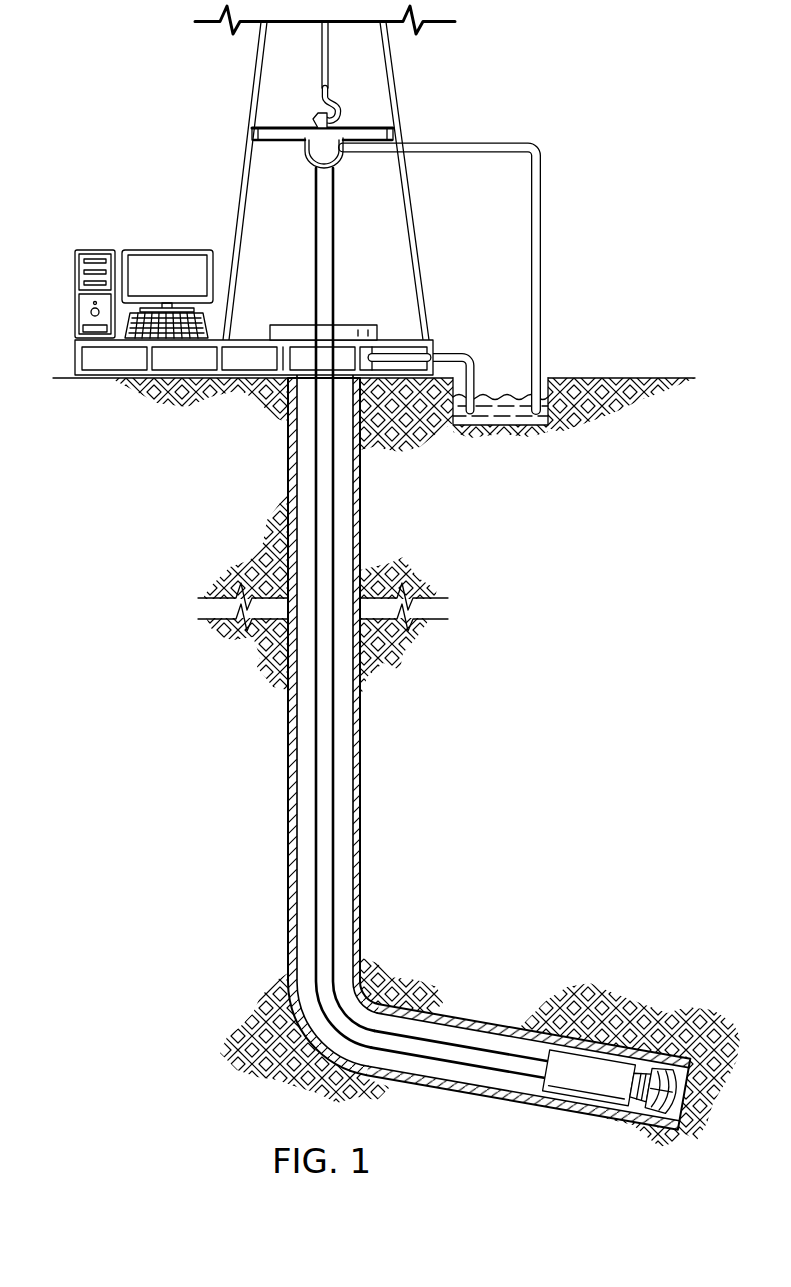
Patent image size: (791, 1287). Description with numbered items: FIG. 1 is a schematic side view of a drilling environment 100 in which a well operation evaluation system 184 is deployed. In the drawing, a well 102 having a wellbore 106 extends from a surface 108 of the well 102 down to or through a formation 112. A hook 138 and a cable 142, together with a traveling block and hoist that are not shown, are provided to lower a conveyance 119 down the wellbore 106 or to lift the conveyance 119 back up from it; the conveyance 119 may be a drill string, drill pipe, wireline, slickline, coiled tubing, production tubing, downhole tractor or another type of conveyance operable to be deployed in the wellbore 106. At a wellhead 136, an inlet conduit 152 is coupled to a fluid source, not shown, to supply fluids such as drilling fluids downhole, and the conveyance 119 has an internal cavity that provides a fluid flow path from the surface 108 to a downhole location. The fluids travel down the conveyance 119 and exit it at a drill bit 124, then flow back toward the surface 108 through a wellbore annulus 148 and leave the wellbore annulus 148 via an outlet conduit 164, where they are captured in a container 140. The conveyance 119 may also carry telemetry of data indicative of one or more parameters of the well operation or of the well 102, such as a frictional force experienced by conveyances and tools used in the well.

The drilling environment 100 is at (178, 156).
The well 102 is at (352, 316).
The wellbore 106 is at (357, 513).
The surface 108 is at (672, 377).
The formation 112 is at (510, 982).
The conveyance 119 is at (320, 851).
The drill bit 124 is at (666, 1112).
The wellhead 136 is at (292, 325).
The hook 138 is at (338, 112).
The container 140 is at (505, 423).
The cable 142 is at (322, 77).
The wellbore annulus 148 is at (303, 452).
The inlet conduit 152 is at (487, 143).
The outlet conduit 164 is at (450, 352).
The well operation evaluation system 184 is at (95, 250).